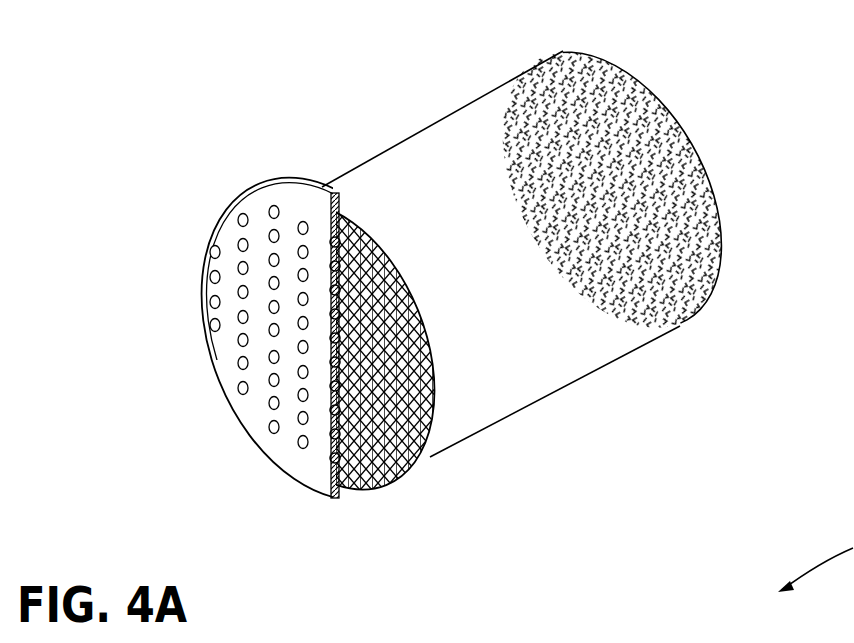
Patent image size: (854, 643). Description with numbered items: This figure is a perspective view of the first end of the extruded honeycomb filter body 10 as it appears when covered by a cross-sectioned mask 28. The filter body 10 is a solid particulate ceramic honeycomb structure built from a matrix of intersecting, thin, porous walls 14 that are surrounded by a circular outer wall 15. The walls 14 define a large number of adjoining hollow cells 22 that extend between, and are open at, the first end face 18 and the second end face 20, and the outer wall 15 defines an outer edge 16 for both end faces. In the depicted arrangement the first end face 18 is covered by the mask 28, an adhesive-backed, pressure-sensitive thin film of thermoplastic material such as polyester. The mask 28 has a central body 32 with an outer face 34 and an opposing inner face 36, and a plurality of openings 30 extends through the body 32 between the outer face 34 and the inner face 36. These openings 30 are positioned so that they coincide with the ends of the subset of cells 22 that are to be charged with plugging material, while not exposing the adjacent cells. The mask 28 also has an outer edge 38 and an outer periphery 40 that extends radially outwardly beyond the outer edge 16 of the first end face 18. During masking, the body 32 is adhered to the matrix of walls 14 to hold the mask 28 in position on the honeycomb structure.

The filter body 10 is at (437, 78).
The walls 14 is at (395, 270).
The outer wall 15 is at (427, 140).
The outer edge 16 is at (352, 478).
The first end face 18 is at (447, 458).
The second end face 20 is at (690, 152).
The cells 22 is at (447, 380).
The mask 28 is at (200, 210).
The openings 30 is at (208, 302).
The central body 32 is at (233, 323).
The outer face 34 is at (262, 410).
The inner face 36 is at (296, 178).
The outer edge 38 is at (330, 192).
The outer periphery 40 is at (227, 360).